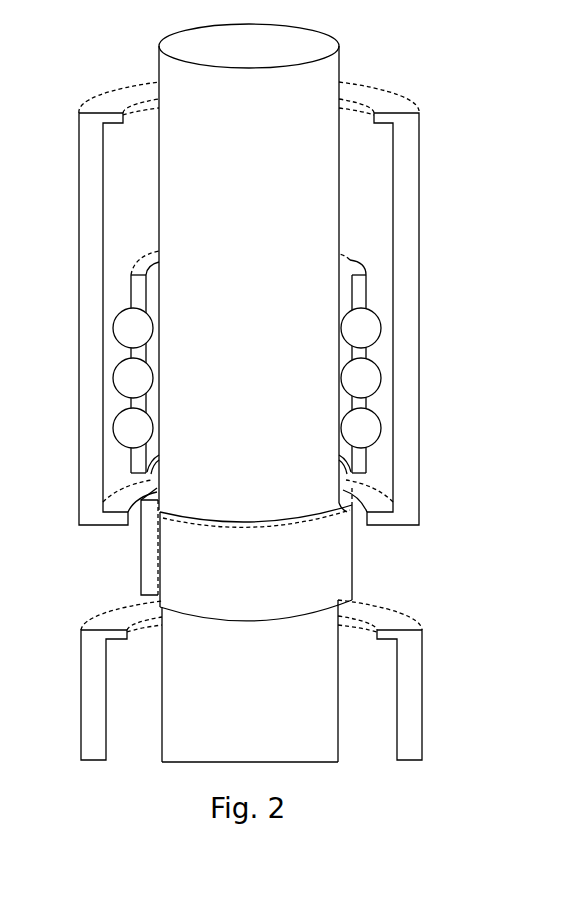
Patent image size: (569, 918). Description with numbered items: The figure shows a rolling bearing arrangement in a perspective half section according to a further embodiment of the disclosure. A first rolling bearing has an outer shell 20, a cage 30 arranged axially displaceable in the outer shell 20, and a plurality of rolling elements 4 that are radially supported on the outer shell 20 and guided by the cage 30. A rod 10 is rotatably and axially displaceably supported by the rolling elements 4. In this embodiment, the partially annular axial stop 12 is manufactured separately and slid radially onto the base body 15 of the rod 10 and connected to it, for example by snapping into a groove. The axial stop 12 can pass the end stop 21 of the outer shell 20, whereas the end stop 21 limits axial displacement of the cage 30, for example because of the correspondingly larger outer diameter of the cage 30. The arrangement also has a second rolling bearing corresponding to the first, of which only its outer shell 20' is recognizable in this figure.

The base body 15 is at (261, 57).
The outer shell 20 is at (309, 303).
The end stop 21 is at (113, 509).
The rolling elements 4 is at (359, 378).
The cage 30 is at (350, 472).
The axial stop 12 is at (329, 508).
The rod 10 is at (250, 655).
The outer shell 20' is at (316, 680).